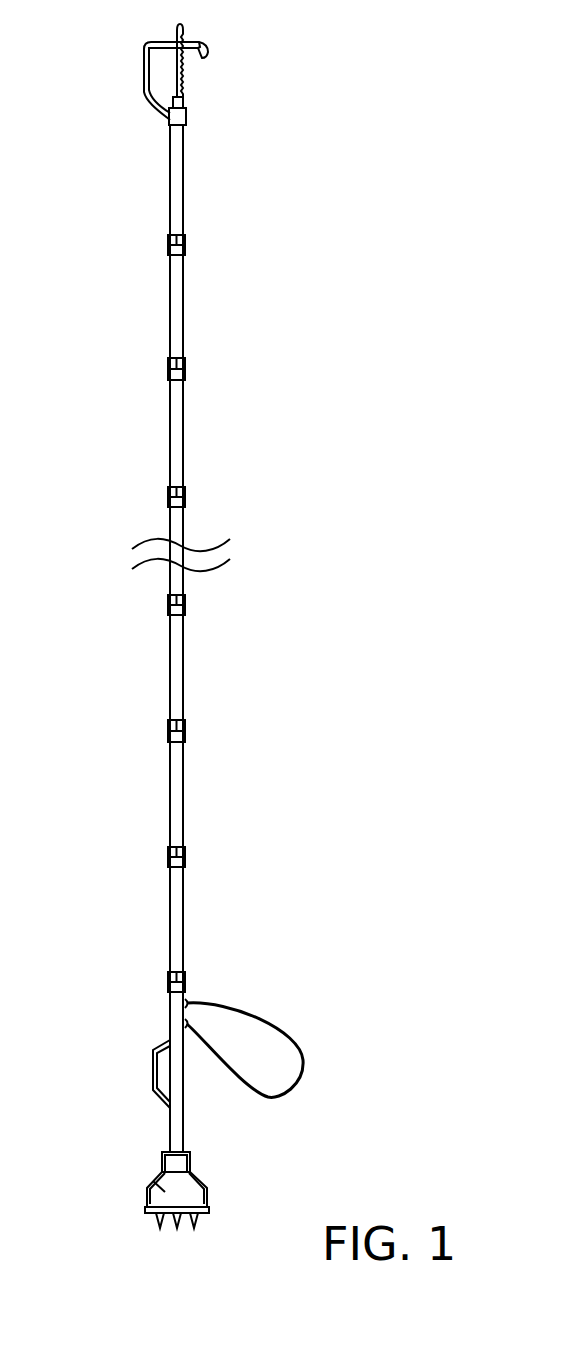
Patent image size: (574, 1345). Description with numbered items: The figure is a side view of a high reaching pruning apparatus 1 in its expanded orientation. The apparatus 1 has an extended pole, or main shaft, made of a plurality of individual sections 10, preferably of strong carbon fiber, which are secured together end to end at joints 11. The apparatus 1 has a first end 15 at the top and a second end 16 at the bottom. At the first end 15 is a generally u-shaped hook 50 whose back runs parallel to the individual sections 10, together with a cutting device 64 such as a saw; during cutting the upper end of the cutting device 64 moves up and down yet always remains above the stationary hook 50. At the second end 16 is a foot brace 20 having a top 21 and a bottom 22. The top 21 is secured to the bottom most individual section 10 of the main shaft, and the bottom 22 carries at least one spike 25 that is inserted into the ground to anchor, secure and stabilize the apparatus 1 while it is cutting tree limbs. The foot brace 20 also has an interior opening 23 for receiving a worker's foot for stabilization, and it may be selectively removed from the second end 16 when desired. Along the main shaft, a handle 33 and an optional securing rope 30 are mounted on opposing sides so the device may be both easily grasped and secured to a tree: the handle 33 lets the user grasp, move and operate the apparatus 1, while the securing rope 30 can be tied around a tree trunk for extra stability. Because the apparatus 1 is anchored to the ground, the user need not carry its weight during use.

The high reaching pruning apparatus 1 is at (192, 646).
The individual sections 10 is at (177, 300).
The joints 11 is at (170, 370).
The first end 15 is at (186, 118).
The second end 16 is at (170, 1150).
The foot brace 20 is at (207, 1190).
The top 21 is at (192, 1158).
The bottom 22 is at (209, 1211).
The interior opening 23 is at (163, 1190).
The spike 25 is at (177, 1222).
The securing rope 30 is at (255, 1026).
The handle 33 is at (151, 1060).
The hook 50 is at (144, 69).
The cutting device 64 is at (183, 74).